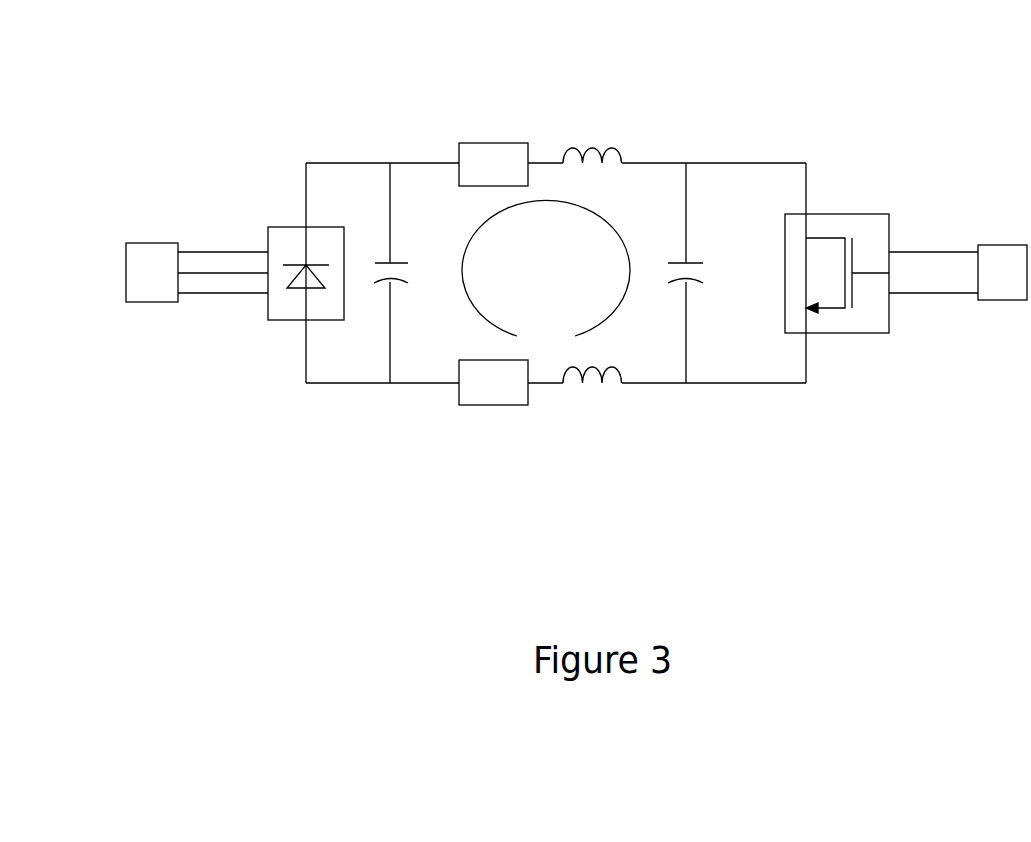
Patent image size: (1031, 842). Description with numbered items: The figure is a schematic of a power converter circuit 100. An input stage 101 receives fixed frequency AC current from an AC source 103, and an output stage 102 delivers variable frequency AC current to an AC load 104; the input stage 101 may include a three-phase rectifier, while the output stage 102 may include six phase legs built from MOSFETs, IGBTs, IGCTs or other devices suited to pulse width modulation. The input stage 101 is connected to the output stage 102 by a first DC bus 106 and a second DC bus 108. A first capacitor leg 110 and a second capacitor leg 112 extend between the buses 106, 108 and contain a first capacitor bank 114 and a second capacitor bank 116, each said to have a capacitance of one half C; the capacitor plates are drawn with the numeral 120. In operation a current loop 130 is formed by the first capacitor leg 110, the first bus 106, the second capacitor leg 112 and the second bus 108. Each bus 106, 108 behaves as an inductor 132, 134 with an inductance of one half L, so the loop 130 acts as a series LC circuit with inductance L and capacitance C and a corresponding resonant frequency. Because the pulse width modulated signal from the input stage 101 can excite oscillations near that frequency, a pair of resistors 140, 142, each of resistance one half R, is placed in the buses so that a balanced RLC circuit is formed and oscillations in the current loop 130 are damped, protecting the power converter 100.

The power converter circuit 100 is at (786, 95).
The input stage 101 is at (283, 227).
The output stage 102 is at (865, 214).
The AC source 103 is at (170, 287).
The AC load 104 is at (1019, 287).
The first DC bus 106 is at (347, 163).
The second DC bus 108 is at (321, 383).
The first capacitor leg 110 is at (390, 214).
The second capacitor leg 112 is at (687, 205).
The first capacitor bank 114 is at (398, 263).
The second capacitor bank 116 is at (694, 263).
The capacitor plate 120 is at (378, 262).
The current loop 130 is at (590, 328).
The inductor 132 is at (606, 148).
The inductor 134 is at (600, 373).
The resistor 140 is at (493, 143).
The resistor 142 is at (478, 405).